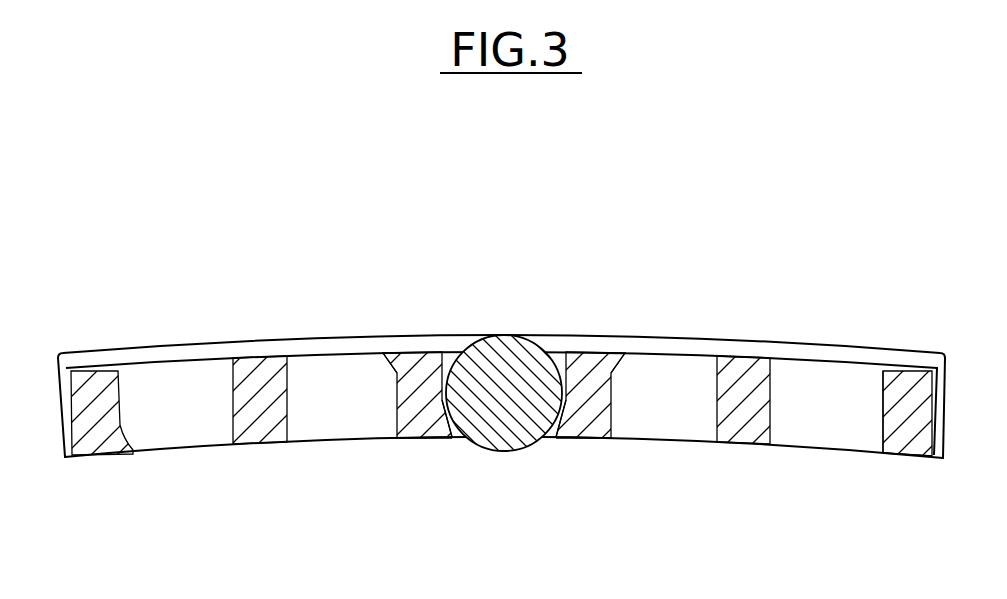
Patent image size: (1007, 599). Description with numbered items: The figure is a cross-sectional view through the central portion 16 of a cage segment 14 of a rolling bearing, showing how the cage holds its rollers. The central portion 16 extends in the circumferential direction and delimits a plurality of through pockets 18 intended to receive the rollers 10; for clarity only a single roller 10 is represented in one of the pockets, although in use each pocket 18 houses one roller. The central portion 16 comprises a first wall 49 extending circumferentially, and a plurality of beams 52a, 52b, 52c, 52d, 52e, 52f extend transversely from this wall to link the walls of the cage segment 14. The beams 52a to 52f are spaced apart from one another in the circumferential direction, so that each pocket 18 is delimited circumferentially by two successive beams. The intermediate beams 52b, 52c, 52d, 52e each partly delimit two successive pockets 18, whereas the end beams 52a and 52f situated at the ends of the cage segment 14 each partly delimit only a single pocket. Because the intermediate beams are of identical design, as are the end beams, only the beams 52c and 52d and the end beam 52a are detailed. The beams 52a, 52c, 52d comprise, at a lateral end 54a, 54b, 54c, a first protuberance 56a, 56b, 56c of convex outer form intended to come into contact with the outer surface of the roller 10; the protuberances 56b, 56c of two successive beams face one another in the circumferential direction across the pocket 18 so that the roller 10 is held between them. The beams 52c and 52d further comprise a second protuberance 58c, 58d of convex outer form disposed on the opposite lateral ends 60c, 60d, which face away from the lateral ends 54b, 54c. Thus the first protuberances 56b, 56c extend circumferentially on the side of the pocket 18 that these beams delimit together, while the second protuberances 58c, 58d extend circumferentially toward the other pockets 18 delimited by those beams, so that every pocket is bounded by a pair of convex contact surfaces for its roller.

The roller 10 is at (497, 337).
The cage segment 14 is at (799, 286).
The central portion 16 is at (970, 331).
The through pocket 18 is at (540, 333).
The first wall 49 is at (172, 361).
The beam 52a is at (914, 363).
The beam 52b is at (744, 353).
The beam 52c is at (578, 443).
The beam 52d is at (425, 442).
The beam 52e is at (260, 354).
The beam 52f is at (88, 349).
The lateral end 54a is at (903, 458).
The lateral end 54b is at (612, 439).
The lateral end 54c is at (397, 439).
The first protuberance 56a is at (867, 453).
The first protuberance 56b is at (550, 438).
The first protuberance 56c is at (457, 438).
The second protuberance 58c is at (625, 352).
The second protuberance 58d is at (381, 351).
The lateral end 60c is at (580, 350).
The lateral end 60d is at (421, 350).